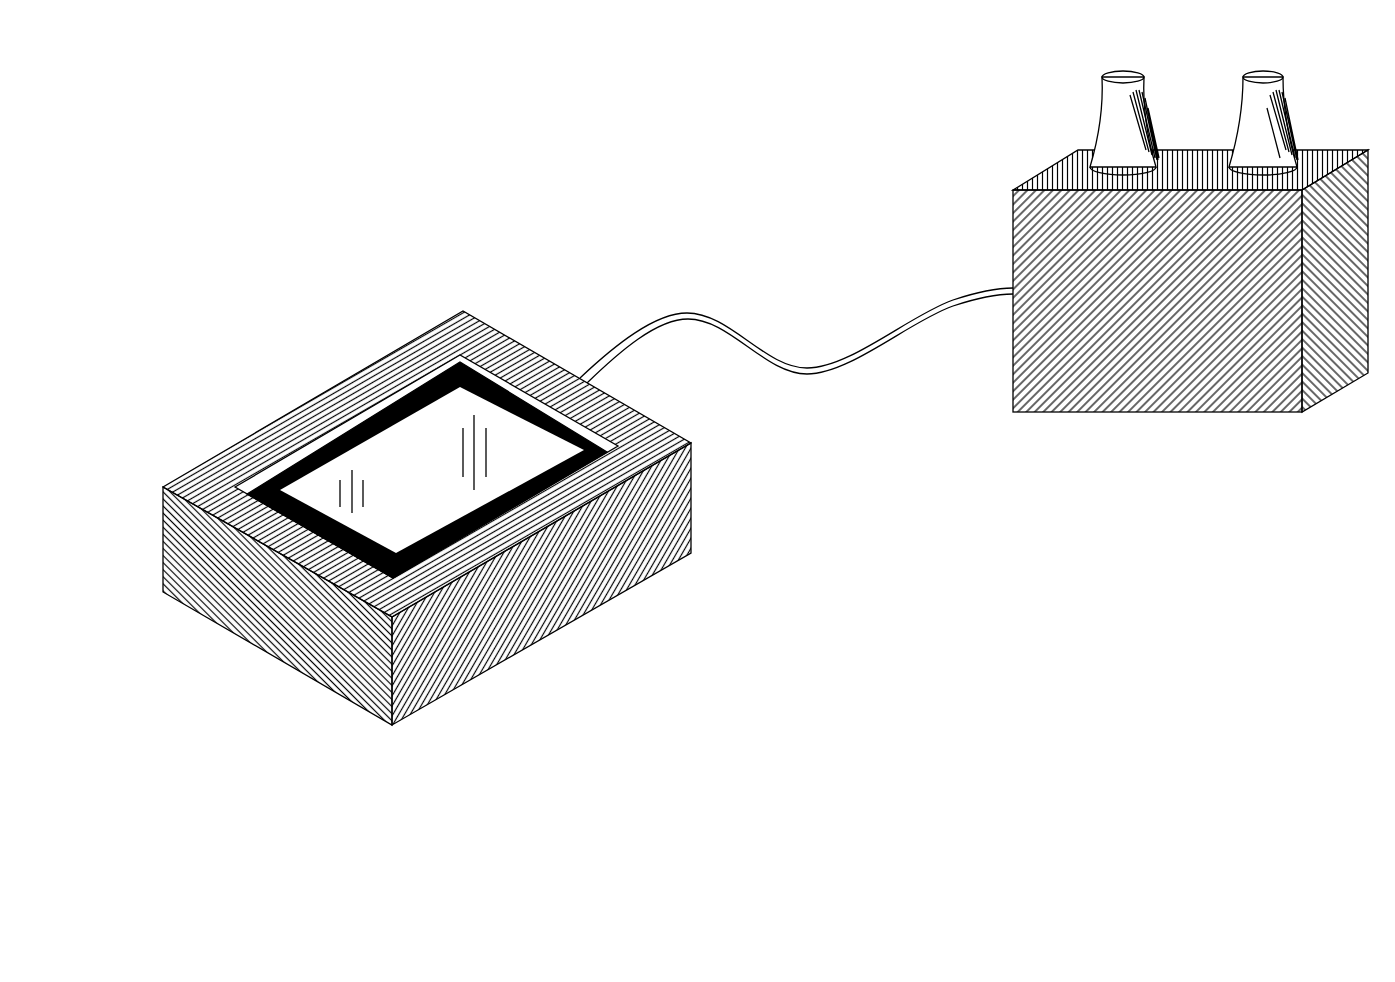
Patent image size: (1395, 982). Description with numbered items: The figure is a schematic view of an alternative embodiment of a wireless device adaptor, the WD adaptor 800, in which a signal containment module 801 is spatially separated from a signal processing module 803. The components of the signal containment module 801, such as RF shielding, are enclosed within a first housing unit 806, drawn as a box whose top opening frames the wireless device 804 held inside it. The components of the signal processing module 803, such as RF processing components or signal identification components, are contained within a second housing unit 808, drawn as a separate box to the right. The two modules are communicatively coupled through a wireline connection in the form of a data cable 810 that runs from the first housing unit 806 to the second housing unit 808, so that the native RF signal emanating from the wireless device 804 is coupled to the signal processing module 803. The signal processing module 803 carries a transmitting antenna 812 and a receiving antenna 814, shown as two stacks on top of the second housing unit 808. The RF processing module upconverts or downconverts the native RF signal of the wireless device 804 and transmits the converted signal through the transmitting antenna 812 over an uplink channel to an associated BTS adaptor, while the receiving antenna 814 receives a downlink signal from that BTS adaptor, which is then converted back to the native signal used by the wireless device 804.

The WD adaptor 800 is at (182, 61).
The signal containment module 801 is at (250, 357).
The signal processing module 803 is at (1368, 427).
The wireless device 804 is at (440, 420).
The first housing unit 806 is at (545, 623).
The second housing unit 808 is at (1043, 285).
The data cable 810 is at (687, 312).
The transmitting antenna 812 is at (1123, 120).
The receiving antenna 814 is at (1265, 120).